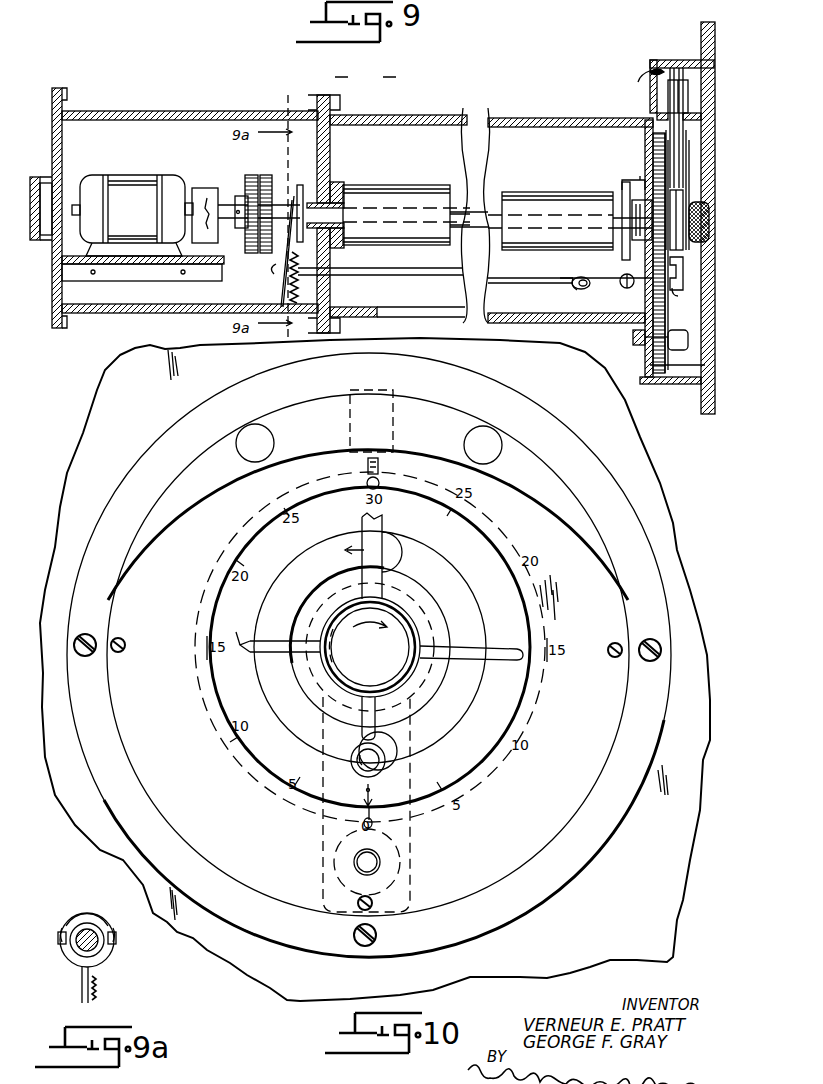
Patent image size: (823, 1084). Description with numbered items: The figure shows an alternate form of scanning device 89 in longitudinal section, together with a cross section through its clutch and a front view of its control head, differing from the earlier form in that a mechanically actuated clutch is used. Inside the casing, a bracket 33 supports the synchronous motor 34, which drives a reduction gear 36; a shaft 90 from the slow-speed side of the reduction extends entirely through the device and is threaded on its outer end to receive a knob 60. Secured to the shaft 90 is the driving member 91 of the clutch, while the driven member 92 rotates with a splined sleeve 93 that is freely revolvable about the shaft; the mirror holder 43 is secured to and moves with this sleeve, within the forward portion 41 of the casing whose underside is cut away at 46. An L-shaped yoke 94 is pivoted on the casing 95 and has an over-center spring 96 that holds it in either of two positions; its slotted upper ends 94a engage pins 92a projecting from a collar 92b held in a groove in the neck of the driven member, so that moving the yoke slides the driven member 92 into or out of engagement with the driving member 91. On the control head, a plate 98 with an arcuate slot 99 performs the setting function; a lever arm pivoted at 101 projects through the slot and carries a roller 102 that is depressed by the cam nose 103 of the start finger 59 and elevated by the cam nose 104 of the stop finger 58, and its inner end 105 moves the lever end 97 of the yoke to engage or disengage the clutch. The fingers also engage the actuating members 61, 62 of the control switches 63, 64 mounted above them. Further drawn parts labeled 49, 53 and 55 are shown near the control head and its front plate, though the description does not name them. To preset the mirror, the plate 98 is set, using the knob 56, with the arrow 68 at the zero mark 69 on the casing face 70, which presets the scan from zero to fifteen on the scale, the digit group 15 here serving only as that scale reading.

In FIG. 9, the bracket 33 is at (138, 273).
In FIG. 9, the synchronous motor 34 is at (130, 181).
In FIG. 9, the reduction gear 36 is at (201, 188).
In FIG. 9, the forward portion of the casing 41 is at (472, 228).
In FIG. 9, the mirror holder 43 is at (398, 186).
In FIG. 9, the cut-away portion 46 is at (577, 321).
In FIG. 9, the roller 49 is at (622, 182).
In FIG. 9, the panel 53 is at (690, 360).
In FIG. 9, the front plate 55 is at (648, 384).
In FIG. 9, the knob 56 is at (678, 336).
In FIG. 9, the stop finger 58 is at (686, 170).
In FIG. 10, the stop finger 58 is at (467, 656).
In FIG. 9, the start finger 59 is at (682, 188).
In FIG. 10, the start finger 59 is at (382, 526).
In FIG. 9, the knob 60 is at (709, 222).
In FIG. 10, the knob 60 is at (421, 624).
In FIG. 9, the actuating member 61 is at (676, 125).
In FIG. 10, the actuating member 61 is at (380, 462).
In FIG. 9, the actuating member 62 is at (683, 148).
In FIG. 10, the actuating member 62 is at (380, 482).
In FIG. 9, the control switch 63 is at (688, 96).
In FIG. 10, the control switch 63 is at (400, 420).
In FIG. 9, the control switch 64 is at (650, 72).
In FIG. 10, the arrow 68 is at (374, 797).
In FIG. 10, the zero mark 69 is at (374, 826).
In FIG. 10, the face of the casing 70 is at (539, 801).
In FIG. 9, the scanning device 89 is at (365, 77).
In FIG. 9, the shaft 90 is at (224, 203).
In FIG. 9A, the shaft 90 is at (100, 932).
In FIG. 9, the driving member of the clutch 91 is at (251, 176).
In FIG. 9, the driven member of the clutch 92 is at (273, 178).
In FIG. 9A, the pins 92a is at (58, 940).
In FIG. 9A, the collar 92b is at (93, 914).
In FIG. 9, the splined sleeve 93 is at (322, 200).
In FIG. 9A, the splined sleeve 93 is at (93, 924).
In FIG. 9, the L-shaped yoke 94 is at (368, 278).
In FIG. 9A, the L-shaped yoke 94 is at (82, 988).
In FIG. 9A, the slotted upper ends 94a is at (60, 930).
In FIG. 9, the casing 95 is at (276, 266).
In FIG. 9, the over-center spring 96 is at (284, 288).
In FIG. 9A, the over-center spring 96 is at (96, 996).
In FIG. 9, the lever end 97 is at (572, 290).
In FIG. 9, the plate 98 is at (652, 150).
In FIG. 10, the plate 98 is at (498, 715).
In FIG. 9, the arcuate slot 99 is at (629, 274).
In FIG. 10, the arcuate slot 99 is at (300, 720).
In FIG. 9, the pivot 101 is at (622, 287).
In FIG. 9, the roller 102 is at (680, 265).
In FIG. 10, the roller 102 is at (387, 776).
In FIG. 9, the cam nose 103 is at (685, 205).
In FIG. 10, the cam nose 103 is at (380, 718).
In FIG. 9, the cam nose 104 is at (680, 296).
In FIG. 10, the cam nose 104 is at (238, 633).
In FIG. 9, the inner end of the lever arm 105 is at (588, 294).
In FIG. 10, the scale arm 15 is at (285, 646).